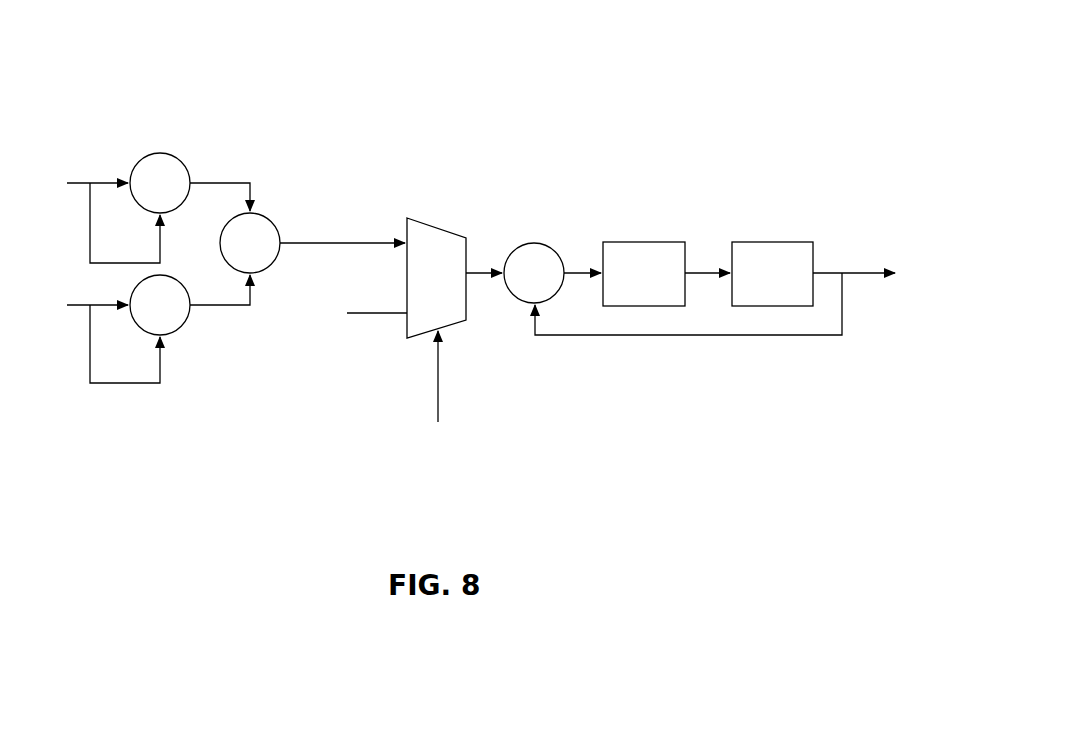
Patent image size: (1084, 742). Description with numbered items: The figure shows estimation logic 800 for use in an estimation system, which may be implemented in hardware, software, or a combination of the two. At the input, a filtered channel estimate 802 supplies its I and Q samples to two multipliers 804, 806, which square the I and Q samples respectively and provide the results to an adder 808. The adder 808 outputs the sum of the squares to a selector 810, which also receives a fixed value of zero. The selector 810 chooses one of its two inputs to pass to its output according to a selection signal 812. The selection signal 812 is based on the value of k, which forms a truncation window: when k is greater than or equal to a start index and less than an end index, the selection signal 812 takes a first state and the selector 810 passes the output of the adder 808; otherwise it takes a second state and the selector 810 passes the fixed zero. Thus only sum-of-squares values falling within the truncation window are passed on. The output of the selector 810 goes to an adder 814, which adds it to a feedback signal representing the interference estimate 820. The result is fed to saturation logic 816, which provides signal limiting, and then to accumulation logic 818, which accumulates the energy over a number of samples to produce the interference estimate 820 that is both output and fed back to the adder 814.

The estimation logic 800 is at (648, 78).
The filtered channel estimate 802 is at (74, 128).
The multiplier 804 is at (163, 153).
The multiplier 806 is at (177, 330).
The adder 808 is at (260, 215).
The selector 810 is at (420, 218).
The selection signal 812 is at (437, 398).
The adder 814 is at (517, 248).
The saturation logic 816 is at (642, 242).
The accumulation logic 818 is at (772, 242).
The interference estimate 820 is at (858, 272).